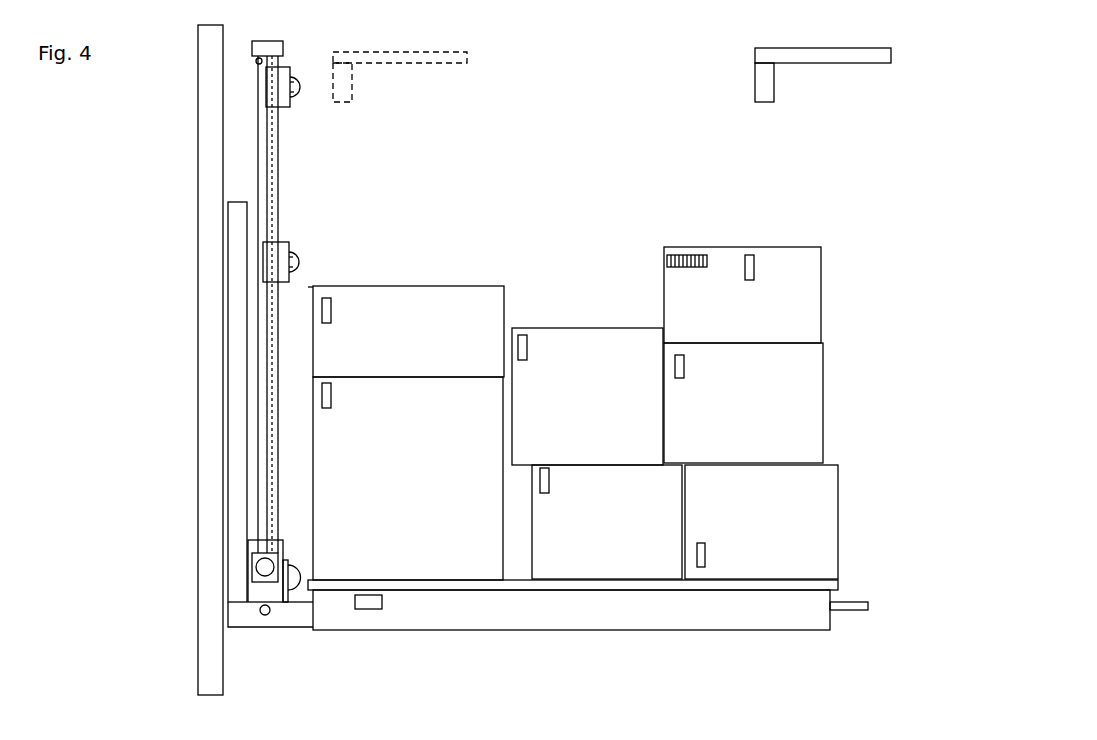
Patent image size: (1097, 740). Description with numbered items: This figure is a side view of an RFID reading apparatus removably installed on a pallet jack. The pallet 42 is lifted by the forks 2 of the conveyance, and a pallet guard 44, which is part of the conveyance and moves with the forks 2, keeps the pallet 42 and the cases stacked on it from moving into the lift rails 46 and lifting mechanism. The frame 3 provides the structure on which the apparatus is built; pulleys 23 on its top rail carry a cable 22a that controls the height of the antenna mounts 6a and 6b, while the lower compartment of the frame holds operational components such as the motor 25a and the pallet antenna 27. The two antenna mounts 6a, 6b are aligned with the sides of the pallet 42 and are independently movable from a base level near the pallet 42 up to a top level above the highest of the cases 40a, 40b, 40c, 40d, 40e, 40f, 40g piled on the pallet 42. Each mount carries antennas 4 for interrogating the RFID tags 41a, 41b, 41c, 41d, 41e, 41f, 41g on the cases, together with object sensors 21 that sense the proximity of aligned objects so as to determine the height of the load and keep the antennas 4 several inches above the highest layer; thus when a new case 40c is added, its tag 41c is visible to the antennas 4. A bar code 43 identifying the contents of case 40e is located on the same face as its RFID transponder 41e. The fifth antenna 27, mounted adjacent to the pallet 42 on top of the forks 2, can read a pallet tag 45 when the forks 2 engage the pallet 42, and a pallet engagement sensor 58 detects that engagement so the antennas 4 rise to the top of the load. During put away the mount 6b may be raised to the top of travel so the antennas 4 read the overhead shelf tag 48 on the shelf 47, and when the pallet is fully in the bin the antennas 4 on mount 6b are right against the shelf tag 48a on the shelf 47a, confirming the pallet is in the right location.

The forks 2 is at (837, 613).
The frame 3 is at (275, 46).
The antennas 4 is at (298, 76).
The antenna mount 6a is at (285, 243).
The antenna mount 6b is at (289, 66).
The object sensors 21 is at (303, 288).
The cable 22a is at (267, 203).
The pulleys 23 is at (256, 62).
The motor 25a is at (267, 570).
The pallet antenna 27 is at (302, 587).
The case 40a is at (389, 357).
The case 40b is at (389, 501).
The case 40c is at (726, 327).
The case 40d is at (588, 546).
The case 40e is at (574, 419).
The case 40f is at (742, 419).
The case 40g is at (744, 537).
The RFID tag 41a is at (331, 310).
The RFID tag 41b is at (331, 400).
The RFID tag 41c is at (754, 268).
The RFID tag 41d is at (576, 482).
The RFID transponder 41e is at (527, 345).
The RFID tag 41f is at (684, 372).
The RFID tag 41g is at (703, 543).
The pallet 42 is at (528, 613).
The bar code 43 is at (697, 256).
The pallet guard 44 is at (237, 320).
The pallet tag 45 is at (378, 603).
The lift rails 46 is at (212, 427).
The shelf 47 is at (770, 52).
The shelf 47a is at (423, 59).
The shelf tag 48 is at (762, 92).
The shelf tag 48a is at (352, 97).
The pallet engagement sensor 58 is at (286, 602).